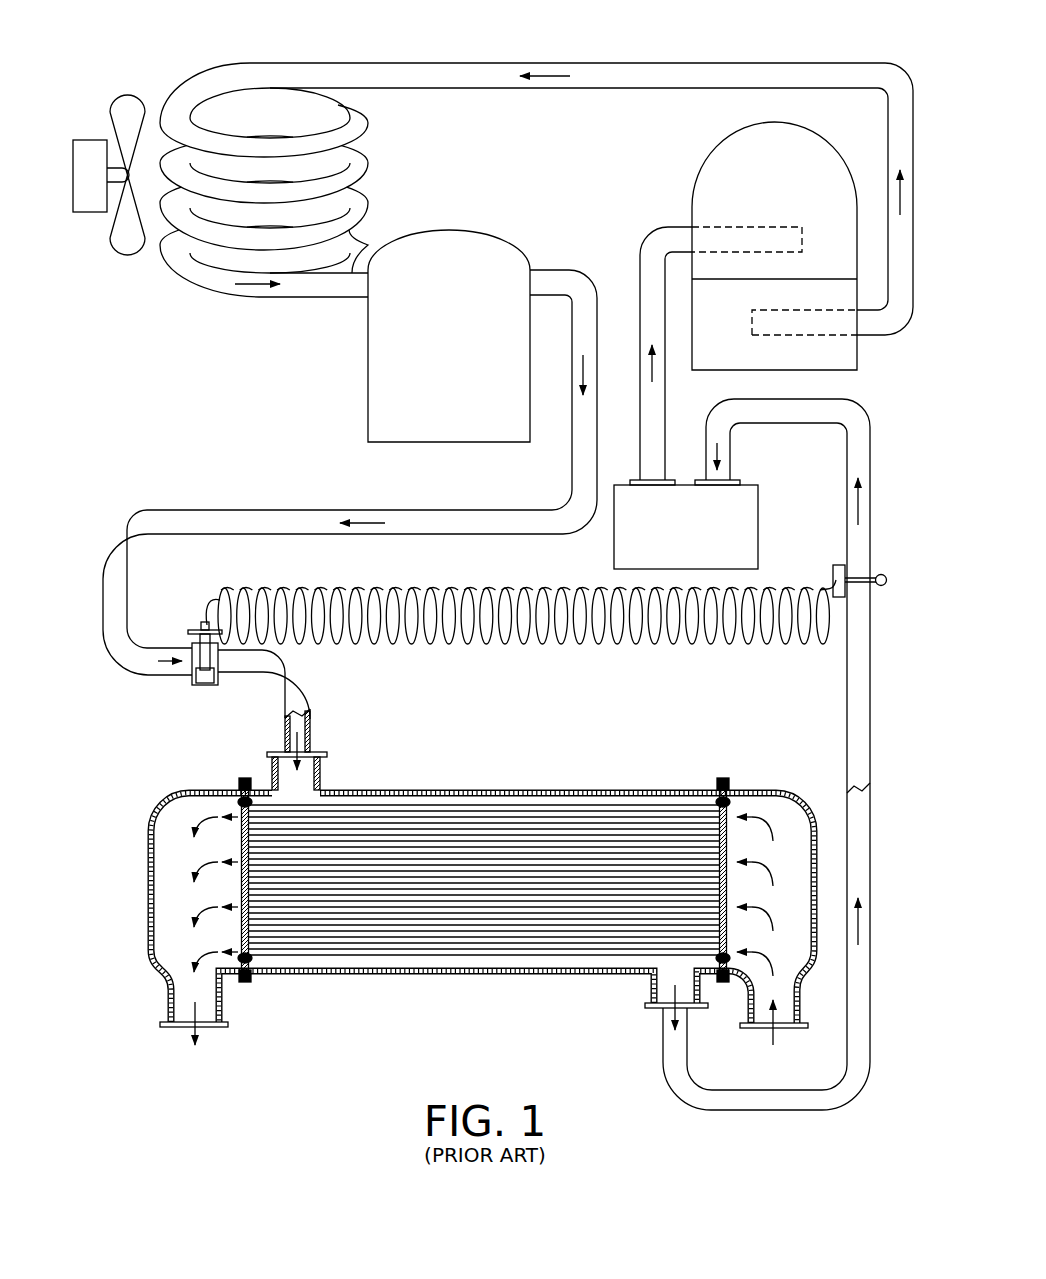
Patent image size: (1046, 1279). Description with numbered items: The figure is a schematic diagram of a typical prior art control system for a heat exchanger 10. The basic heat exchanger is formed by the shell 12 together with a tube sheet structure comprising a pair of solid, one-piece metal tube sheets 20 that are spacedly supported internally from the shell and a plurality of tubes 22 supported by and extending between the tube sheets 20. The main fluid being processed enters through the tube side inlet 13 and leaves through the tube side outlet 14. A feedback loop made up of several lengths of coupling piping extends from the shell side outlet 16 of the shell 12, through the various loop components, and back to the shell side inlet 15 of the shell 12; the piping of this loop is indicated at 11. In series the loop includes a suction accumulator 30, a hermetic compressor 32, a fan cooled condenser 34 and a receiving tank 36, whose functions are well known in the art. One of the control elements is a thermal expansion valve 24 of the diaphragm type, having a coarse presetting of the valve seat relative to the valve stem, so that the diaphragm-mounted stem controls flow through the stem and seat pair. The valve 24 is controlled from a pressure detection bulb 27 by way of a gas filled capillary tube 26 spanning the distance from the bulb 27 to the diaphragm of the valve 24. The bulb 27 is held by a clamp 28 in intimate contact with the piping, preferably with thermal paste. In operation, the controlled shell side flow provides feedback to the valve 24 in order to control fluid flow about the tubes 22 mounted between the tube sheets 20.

The heat exchanger 10 is at (466, 882).
The refrigerant line 11 is at (882, 690).
The shell 12 is at (416, 976).
The tube side inlet 13 is at (758, 1003).
The tube side outlet 14 is at (183, 1005).
The shell side inlet 15 is at (278, 776).
The shell side outlet 16 is at (653, 995).
The tube sheets 20 is at (252, 848).
The tubes 22 is at (422, 834).
The thermal expansion valve 24 is at (203, 692).
The capillary tube 26 is at (435, 590).
The detection bulb 27 is at (838, 565).
The clamp 28 is at (860, 588).
The suction accumulator 30 is at (757, 510).
The hermetic compressor 32 is at (702, 177).
The fan cooled condenser 34 is at (272, 52).
The receiving tank 36 is at (372, 358).